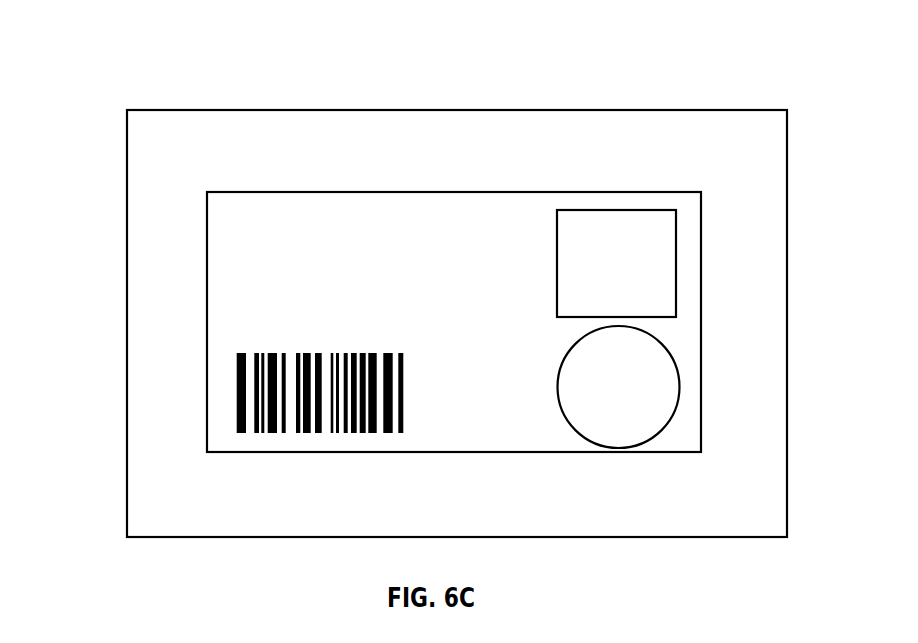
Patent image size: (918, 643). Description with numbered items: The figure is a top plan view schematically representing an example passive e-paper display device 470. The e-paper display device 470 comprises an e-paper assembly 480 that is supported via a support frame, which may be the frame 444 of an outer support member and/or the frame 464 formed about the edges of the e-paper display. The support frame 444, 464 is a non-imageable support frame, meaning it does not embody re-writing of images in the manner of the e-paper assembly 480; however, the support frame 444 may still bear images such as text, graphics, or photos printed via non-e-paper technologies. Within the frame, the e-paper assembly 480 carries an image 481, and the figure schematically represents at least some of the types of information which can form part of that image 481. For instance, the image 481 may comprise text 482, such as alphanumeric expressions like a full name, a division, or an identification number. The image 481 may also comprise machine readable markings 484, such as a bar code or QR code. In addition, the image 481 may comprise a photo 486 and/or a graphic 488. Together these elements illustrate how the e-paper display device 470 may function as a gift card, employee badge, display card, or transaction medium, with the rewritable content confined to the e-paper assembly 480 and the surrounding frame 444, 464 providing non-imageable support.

The e-paper display device 470 is at (175, 73).
The frame 444 is at (457, 323).
The frame 464 is at (710, 156).
The e-paper assembly 480 is at (207, 213).
The image 481 is at (448, 298).
The text 482 is at (253, 269).
The machine readable markings 484 is at (236, 391).
The photo 486 is at (676, 262).
The graphic 488 is at (680, 383).